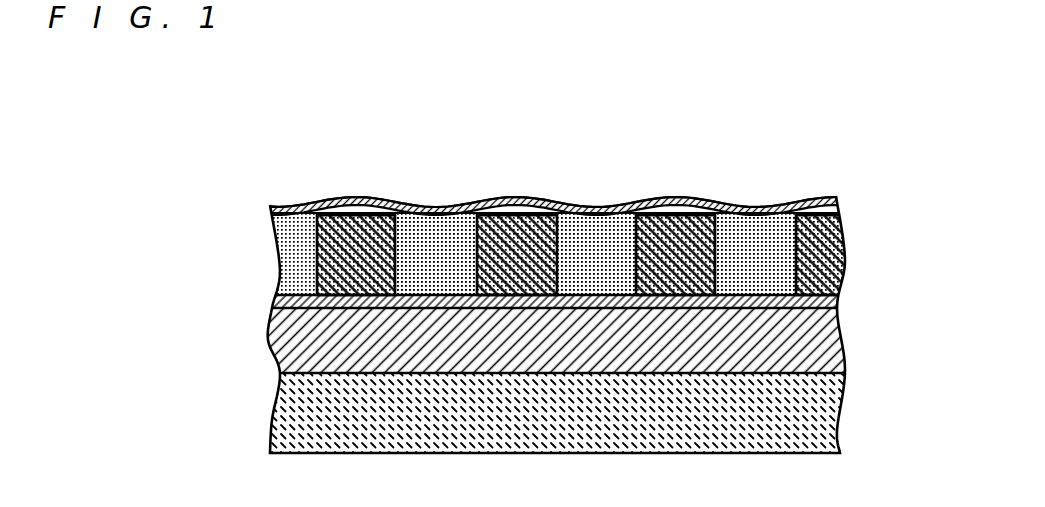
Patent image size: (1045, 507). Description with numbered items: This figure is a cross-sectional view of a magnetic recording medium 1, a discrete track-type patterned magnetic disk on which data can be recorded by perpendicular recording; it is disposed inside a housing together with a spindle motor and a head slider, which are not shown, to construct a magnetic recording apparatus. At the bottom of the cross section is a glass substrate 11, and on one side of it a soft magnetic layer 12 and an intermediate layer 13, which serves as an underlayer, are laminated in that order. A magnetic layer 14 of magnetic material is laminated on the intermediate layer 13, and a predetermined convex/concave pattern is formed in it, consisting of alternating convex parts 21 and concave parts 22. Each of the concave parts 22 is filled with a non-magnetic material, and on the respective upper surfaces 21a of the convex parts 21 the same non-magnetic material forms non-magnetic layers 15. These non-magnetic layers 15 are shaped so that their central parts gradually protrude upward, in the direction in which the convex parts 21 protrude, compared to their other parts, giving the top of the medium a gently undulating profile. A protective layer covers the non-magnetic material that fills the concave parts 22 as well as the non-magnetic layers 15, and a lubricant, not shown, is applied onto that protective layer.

The magnetic recording medium 1 is at (544, 130).
The glass substrate 11 is at (280, 413).
The soft magnetic layer 12 is at (270, 333).
The intermediate layer 13 is at (276, 299).
The magnetic layer 14 is at (296, 233).
The non-magnetic layer 15 is at (507, 198).
The convex part 21 is at (478, 282).
The upper surface of convex part 21a is at (352, 207).
The concave part 22 is at (433, 268).